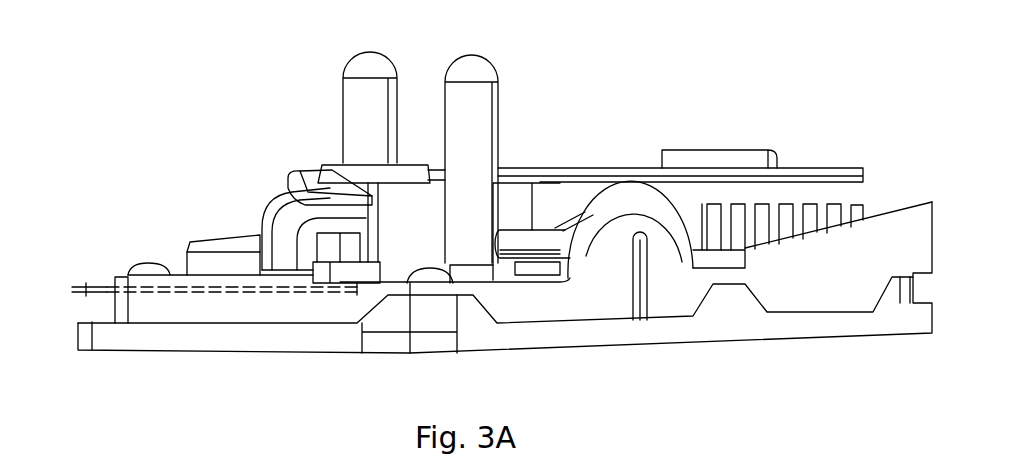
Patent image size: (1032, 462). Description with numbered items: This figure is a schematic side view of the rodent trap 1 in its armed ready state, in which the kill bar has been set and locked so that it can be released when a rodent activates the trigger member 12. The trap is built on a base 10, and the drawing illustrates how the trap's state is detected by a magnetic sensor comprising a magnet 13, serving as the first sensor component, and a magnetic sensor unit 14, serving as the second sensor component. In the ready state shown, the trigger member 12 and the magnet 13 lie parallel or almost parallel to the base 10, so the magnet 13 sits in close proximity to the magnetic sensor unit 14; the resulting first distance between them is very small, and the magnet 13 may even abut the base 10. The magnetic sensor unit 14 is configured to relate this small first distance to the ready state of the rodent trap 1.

The rodent trap 1 is at (638, 41).
The base 10 is at (208, 310).
The trigger member 12 is at (643, 173).
The magnet 13 is at (312, 267).
The magnetic sensor unit 14 is at (313, 316).